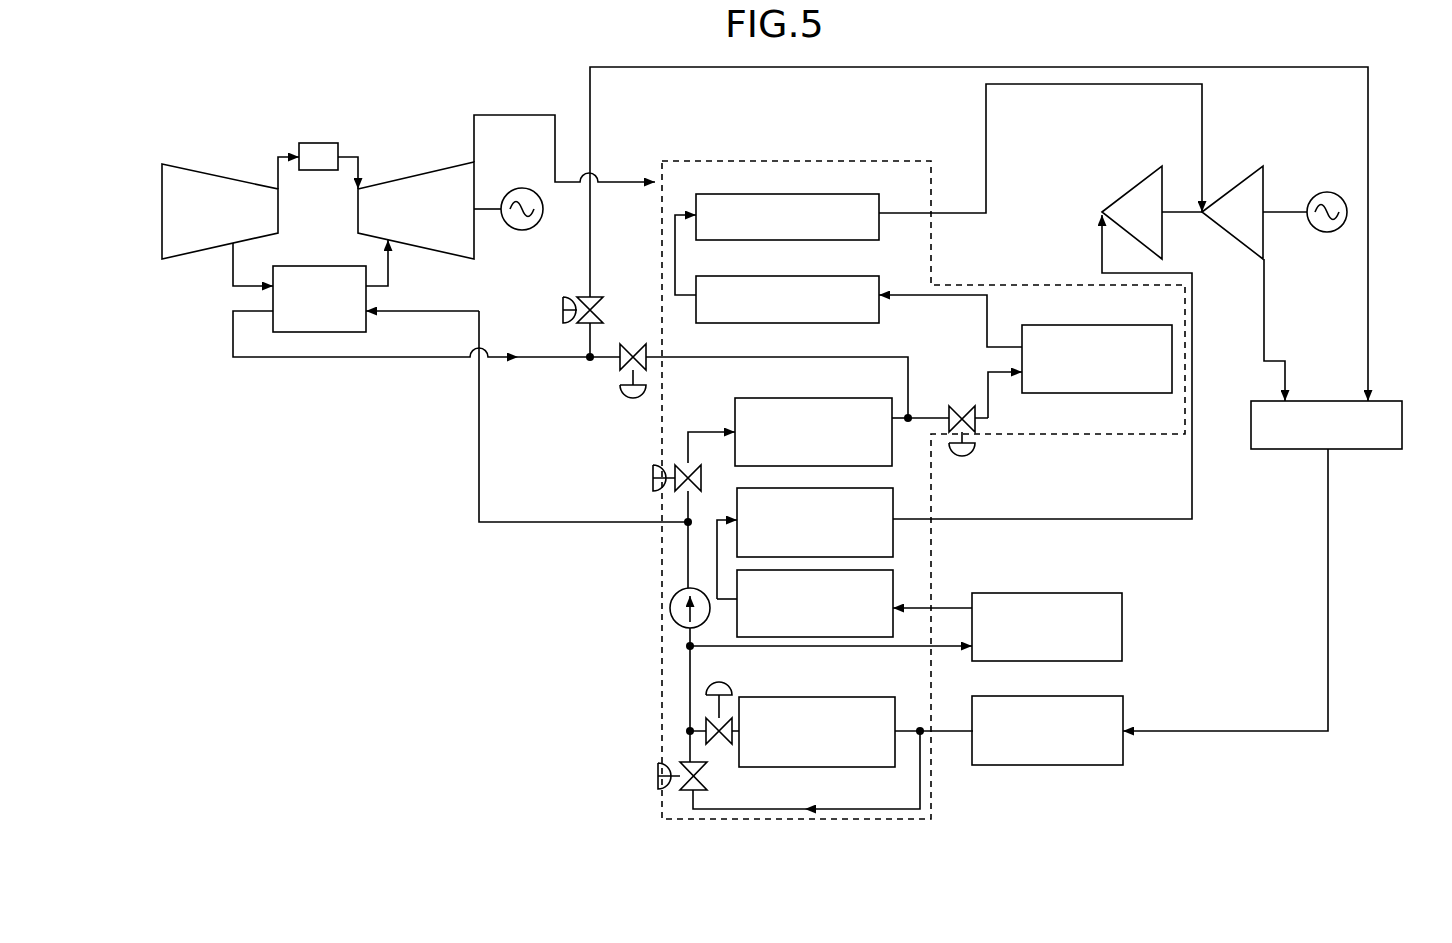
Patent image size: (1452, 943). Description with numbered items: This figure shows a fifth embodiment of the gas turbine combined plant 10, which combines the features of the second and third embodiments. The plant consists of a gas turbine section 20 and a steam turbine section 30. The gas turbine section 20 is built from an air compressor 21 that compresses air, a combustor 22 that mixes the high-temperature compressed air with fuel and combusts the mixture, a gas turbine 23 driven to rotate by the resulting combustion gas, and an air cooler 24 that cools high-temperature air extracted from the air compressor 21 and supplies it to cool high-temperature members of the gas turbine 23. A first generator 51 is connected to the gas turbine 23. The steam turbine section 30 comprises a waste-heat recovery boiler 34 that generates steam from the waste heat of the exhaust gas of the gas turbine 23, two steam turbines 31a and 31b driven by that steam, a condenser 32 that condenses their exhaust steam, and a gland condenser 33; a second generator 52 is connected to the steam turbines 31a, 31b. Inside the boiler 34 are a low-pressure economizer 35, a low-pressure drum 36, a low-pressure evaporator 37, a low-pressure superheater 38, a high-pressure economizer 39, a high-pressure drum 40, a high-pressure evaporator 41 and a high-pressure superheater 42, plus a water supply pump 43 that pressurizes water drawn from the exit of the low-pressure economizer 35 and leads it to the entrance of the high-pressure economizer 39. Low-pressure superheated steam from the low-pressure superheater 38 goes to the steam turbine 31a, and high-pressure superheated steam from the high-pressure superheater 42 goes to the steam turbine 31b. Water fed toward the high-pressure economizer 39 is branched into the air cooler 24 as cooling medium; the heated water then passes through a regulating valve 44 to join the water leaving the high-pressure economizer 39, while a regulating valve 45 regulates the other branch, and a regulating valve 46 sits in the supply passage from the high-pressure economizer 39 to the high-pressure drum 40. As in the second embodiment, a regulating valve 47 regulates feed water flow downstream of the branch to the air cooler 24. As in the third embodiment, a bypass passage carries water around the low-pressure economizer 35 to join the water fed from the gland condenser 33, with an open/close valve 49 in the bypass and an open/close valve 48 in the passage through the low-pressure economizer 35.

The gas turbine combined plant 10 is at (954, 54).
The gas turbine section 20 is at (419, 418).
The air compressor 21 is at (212, 177).
The combustor 22 is at (318, 143).
The gas turbine 23 is at (413, 188).
The air cooler 24 is at (296, 270).
The steam turbine section 30 is at (1126, 795).
The steam turbine at a low-pressure side 31a is at (1143, 183).
The steam turbine at a high-pressure side 31b is at (1243, 183).
The condenser 32 is at (1326, 401).
The gland condenser 33 is at (1095, 682).
The waste-heat recovery boiler 34 is at (672, 802).
The low-pressure economizer 35 is at (876, 697).
The low-pressure drum 36 is at (1095, 578).
The low-pressure evaporator 37 is at (898, 570).
The low-pressure superheater 38 is at (898, 488).
The high-pressure economizer 39 is at (862, 398).
The high-pressure drum 40 is at (1138, 325).
The high-pressure evaporator 41 is at (862, 276).
The high-pressure superheater 42 is at (862, 194).
The water supply pump 43 is at (670, 602).
The regulating valve 44 is at (626, 398).
The regulating valve 45 is at (556, 304).
The regulating valve 46 is at (984, 449).
The regulating valve 47 is at (638, 485).
The open/close valve 48 is at (714, 688).
The open/close valve 49 is at (643, 776).
The first generator 51 is at (529, 195).
The second generator 52 is at (1319, 232).